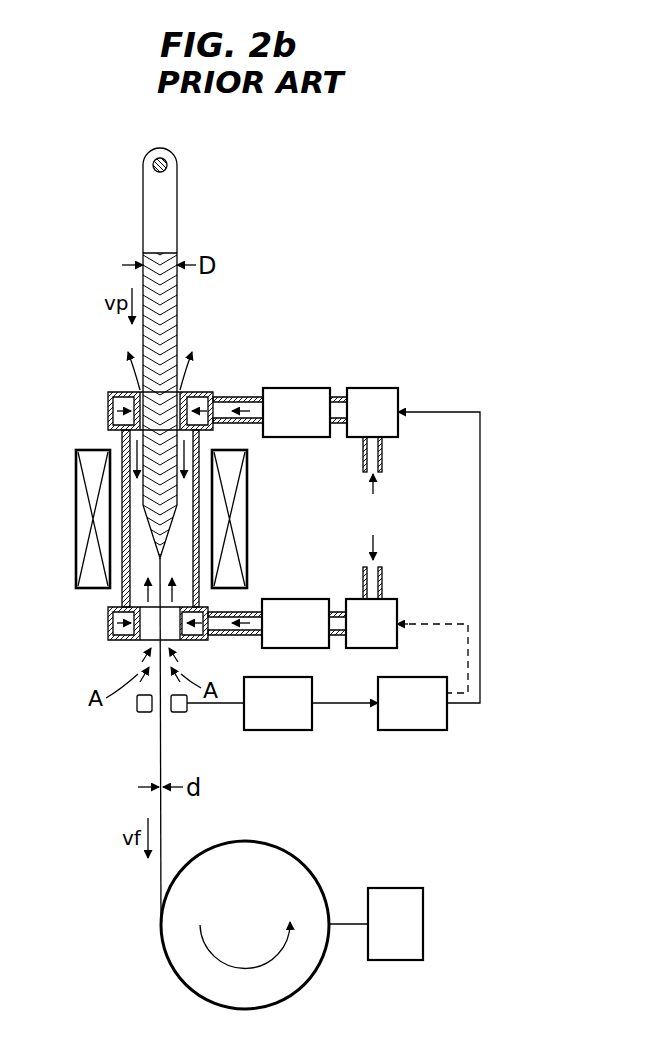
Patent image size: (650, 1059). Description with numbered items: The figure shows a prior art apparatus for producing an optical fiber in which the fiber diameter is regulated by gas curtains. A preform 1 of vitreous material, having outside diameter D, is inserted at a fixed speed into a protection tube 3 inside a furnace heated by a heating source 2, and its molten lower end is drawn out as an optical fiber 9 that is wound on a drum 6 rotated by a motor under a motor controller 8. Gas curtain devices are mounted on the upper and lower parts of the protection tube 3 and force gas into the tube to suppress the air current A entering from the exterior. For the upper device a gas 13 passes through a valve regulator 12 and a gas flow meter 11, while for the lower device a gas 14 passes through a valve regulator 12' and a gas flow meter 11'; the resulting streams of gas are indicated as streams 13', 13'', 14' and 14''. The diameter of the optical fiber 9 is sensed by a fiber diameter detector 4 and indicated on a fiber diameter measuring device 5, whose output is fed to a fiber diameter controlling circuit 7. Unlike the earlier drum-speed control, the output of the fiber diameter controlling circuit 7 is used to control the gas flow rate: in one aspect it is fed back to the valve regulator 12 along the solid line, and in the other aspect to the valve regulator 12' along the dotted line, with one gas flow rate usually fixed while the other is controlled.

The preform 1 is at (178, 298).
The heating source 2 is at (76, 500).
The protection tube 3 is at (122, 592).
The fiber diameter detector 4 is at (143, 712).
The fiber diameter measuring device 5 is at (280, 730).
The drum 6 is at (298, 864).
The fiber diameter controlling circuit 7 is at (408, 730).
The motor controller 8 is at (392, 888).
The optical fiber 9 is at (162, 828).
The gas flow meter 11 is at (305, 391).
The valve regulator 12 is at (372, 409).
The gas 13 is at (394, 491).
The gas 14 is at (398, 543).
The gas flow meter 11' is at (304, 599).
The valve regulator 12' is at (391, 606).
The stream of gas 13' is at (180, 449).
The stream of gas 13'' is at (162, 361).
The stream of gas 14' is at (164, 664).
The stream of gas 14'' is at (172, 600).